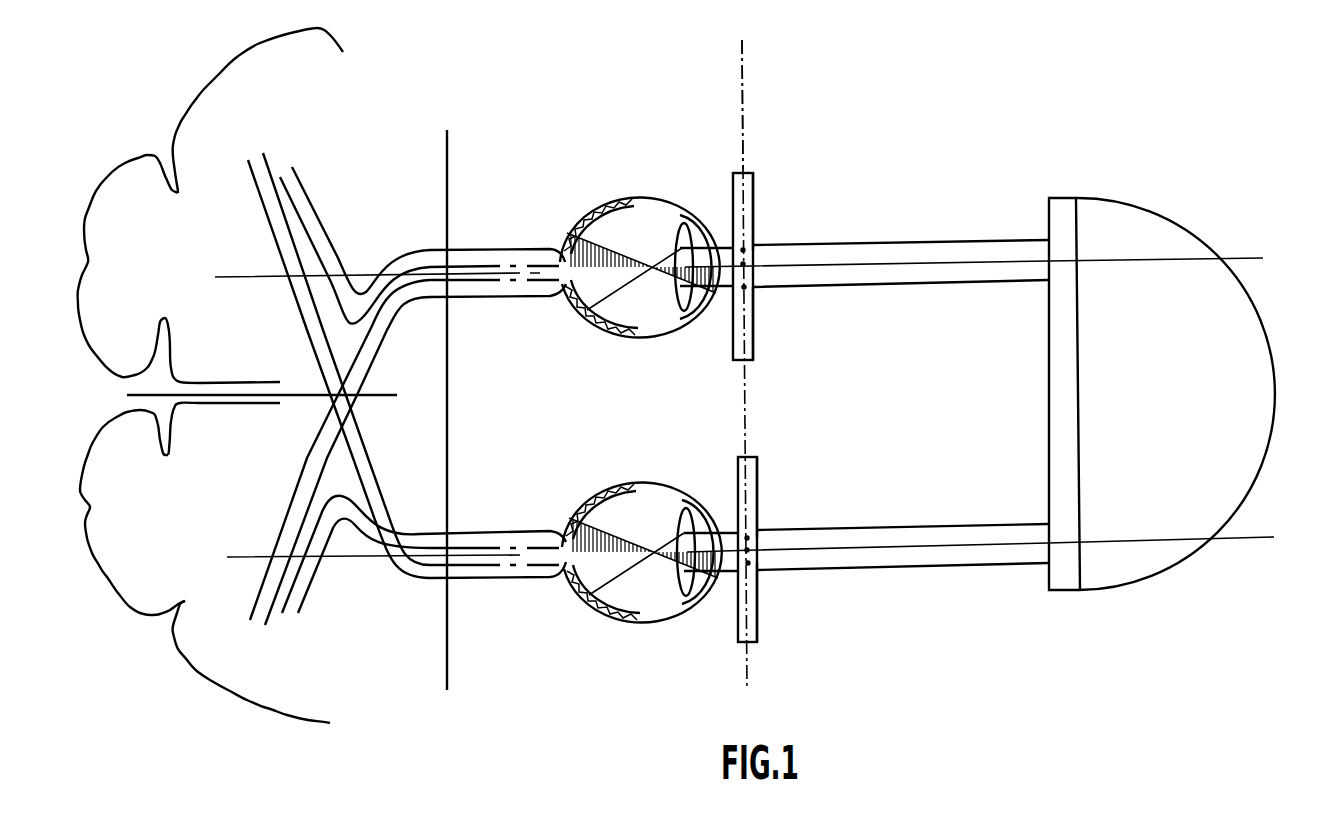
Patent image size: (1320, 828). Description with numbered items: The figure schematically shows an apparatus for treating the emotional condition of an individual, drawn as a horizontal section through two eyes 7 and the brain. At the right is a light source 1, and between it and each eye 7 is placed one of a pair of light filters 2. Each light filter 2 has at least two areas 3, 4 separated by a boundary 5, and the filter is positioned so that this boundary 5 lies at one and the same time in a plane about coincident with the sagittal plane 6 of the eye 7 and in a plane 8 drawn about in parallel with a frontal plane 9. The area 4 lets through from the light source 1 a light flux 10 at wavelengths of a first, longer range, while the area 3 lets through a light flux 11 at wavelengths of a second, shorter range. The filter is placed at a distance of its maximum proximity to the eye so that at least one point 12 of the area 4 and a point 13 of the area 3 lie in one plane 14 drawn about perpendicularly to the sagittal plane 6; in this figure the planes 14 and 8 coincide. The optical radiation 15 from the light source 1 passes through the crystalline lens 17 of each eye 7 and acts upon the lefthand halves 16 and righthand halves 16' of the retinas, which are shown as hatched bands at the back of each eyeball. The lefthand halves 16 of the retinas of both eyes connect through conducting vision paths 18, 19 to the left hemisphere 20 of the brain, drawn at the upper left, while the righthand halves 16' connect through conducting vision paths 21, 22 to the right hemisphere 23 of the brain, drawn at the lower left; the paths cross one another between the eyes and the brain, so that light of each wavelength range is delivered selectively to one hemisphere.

The light source 1 is at (1123, 222).
The light filter 2 is at (758, 180).
The area 3 is at (753, 197).
The area 4 is at (755, 335).
The boundary 5 is at (743, 263).
The sagittal plane 6 is at (225, 277).
The eye 7 is at (662, 195).
The plane 8 is at (743, 102).
The frontal plane 9 is at (448, 167).
The light flux 10 is at (723, 288).
The light flux 11 is at (725, 247).
The point 12 is at (745, 287).
The point 13 is at (743, 250).
The plane 14 is at (743, 63).
The optical radiation 15 is at (946, 241).
The lefthand half of the retina 16 is at (580, 355).
The righthand half of the retina 16' is at (598, 483).
The crystalline lens 17 is at (684, 223).
The conducting vision path 18 is at (308, 197).
The conducting vision path 19 is at (248, 172).
The left hemisphere 20 is at (218, 97).
The conducting vision path 21 is at (262, 582).
The conducting vision path 22 is at (309, 585).
The right hemisphere 23 is at (247, 663).